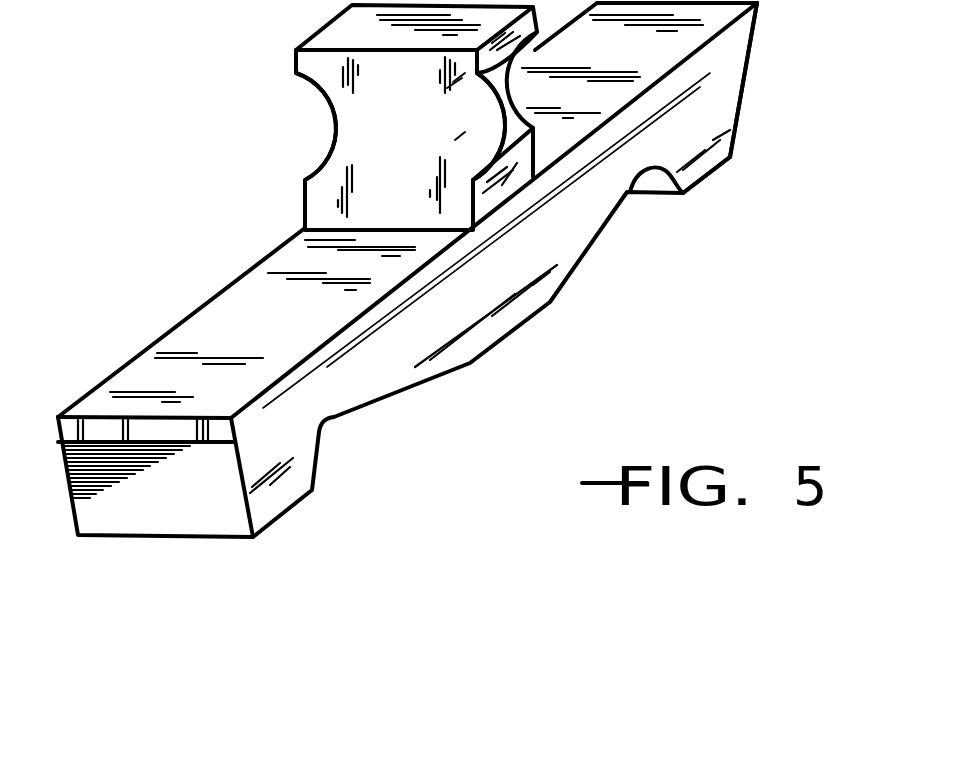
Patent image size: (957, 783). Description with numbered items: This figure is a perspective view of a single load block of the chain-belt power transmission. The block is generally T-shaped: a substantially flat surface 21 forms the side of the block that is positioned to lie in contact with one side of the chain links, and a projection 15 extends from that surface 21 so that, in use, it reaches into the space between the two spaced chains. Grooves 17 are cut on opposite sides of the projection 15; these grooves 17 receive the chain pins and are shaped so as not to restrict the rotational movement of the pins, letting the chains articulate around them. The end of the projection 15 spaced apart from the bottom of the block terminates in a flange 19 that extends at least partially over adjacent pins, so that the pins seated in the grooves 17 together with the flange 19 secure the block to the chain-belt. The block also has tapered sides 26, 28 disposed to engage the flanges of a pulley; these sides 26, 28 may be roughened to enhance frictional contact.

The projection 15 is at (415, 137).
The grooves 17 is at (329, 121).
The flange 19 is at (370, 40).
The flat surface 21 is at (288, 337).
The tapered side 26 is at (135, 497).
The tapered side 28 is at (748, 68).